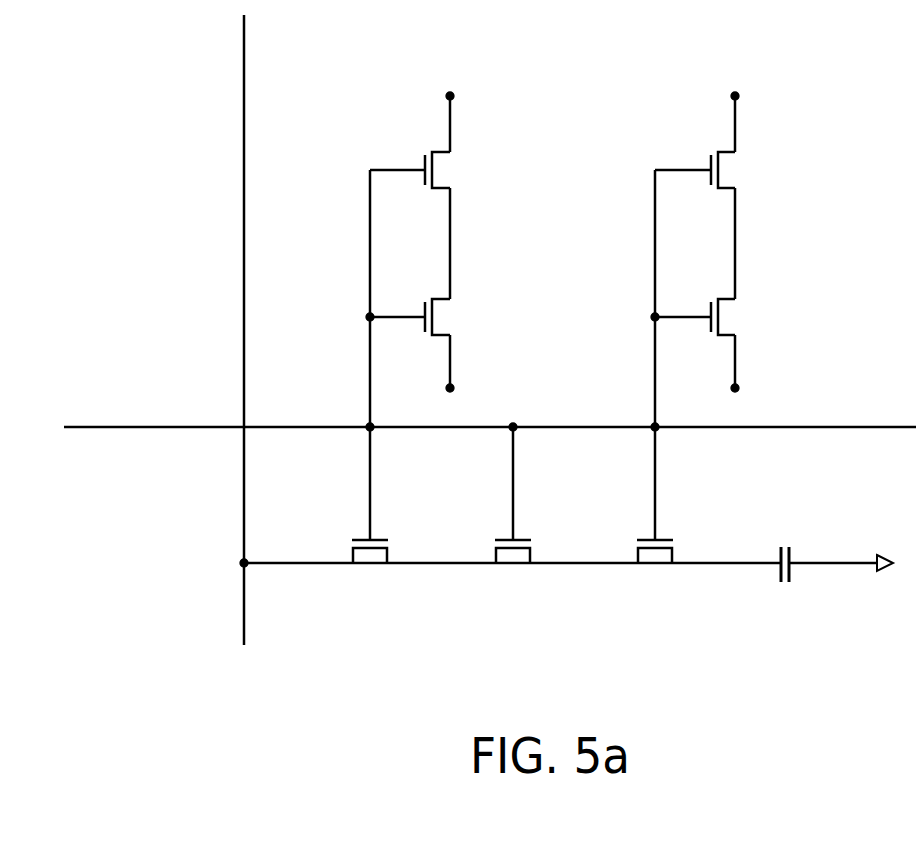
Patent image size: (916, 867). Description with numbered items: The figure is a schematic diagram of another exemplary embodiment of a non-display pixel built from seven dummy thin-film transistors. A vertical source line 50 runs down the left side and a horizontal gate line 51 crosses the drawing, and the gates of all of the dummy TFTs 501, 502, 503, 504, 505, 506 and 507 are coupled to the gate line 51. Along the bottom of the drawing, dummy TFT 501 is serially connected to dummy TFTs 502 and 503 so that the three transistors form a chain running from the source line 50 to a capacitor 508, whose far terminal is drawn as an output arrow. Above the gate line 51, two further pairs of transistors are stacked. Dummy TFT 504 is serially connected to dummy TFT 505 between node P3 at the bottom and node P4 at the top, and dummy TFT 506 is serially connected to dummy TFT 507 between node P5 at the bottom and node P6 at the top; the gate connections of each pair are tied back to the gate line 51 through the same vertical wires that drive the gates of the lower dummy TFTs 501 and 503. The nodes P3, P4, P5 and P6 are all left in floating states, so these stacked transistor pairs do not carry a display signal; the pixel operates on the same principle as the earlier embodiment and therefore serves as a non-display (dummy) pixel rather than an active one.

The source line 50 is at (244, 40).
The gate line 51 is at (143, 425).
The dummy TFT 501 is at (373, 567).
The dummy TFT 502 is at (516, 567).
The dummy TFT 503 is at (659, 567).
The dummy TFT 504 is at (455, 319).
The dummy TFT 505 is at (455, 172).
The dummy TFT 506 is at (741, 319).
The dummy TFT 507 is at (741, 172).
The capacitor 508 is at (787, 588).
The node P3 is at (458, 388).
The node P4 is at (458, 96).
The node P5 is at (743, 388).
The node P6 is at (743, 96).